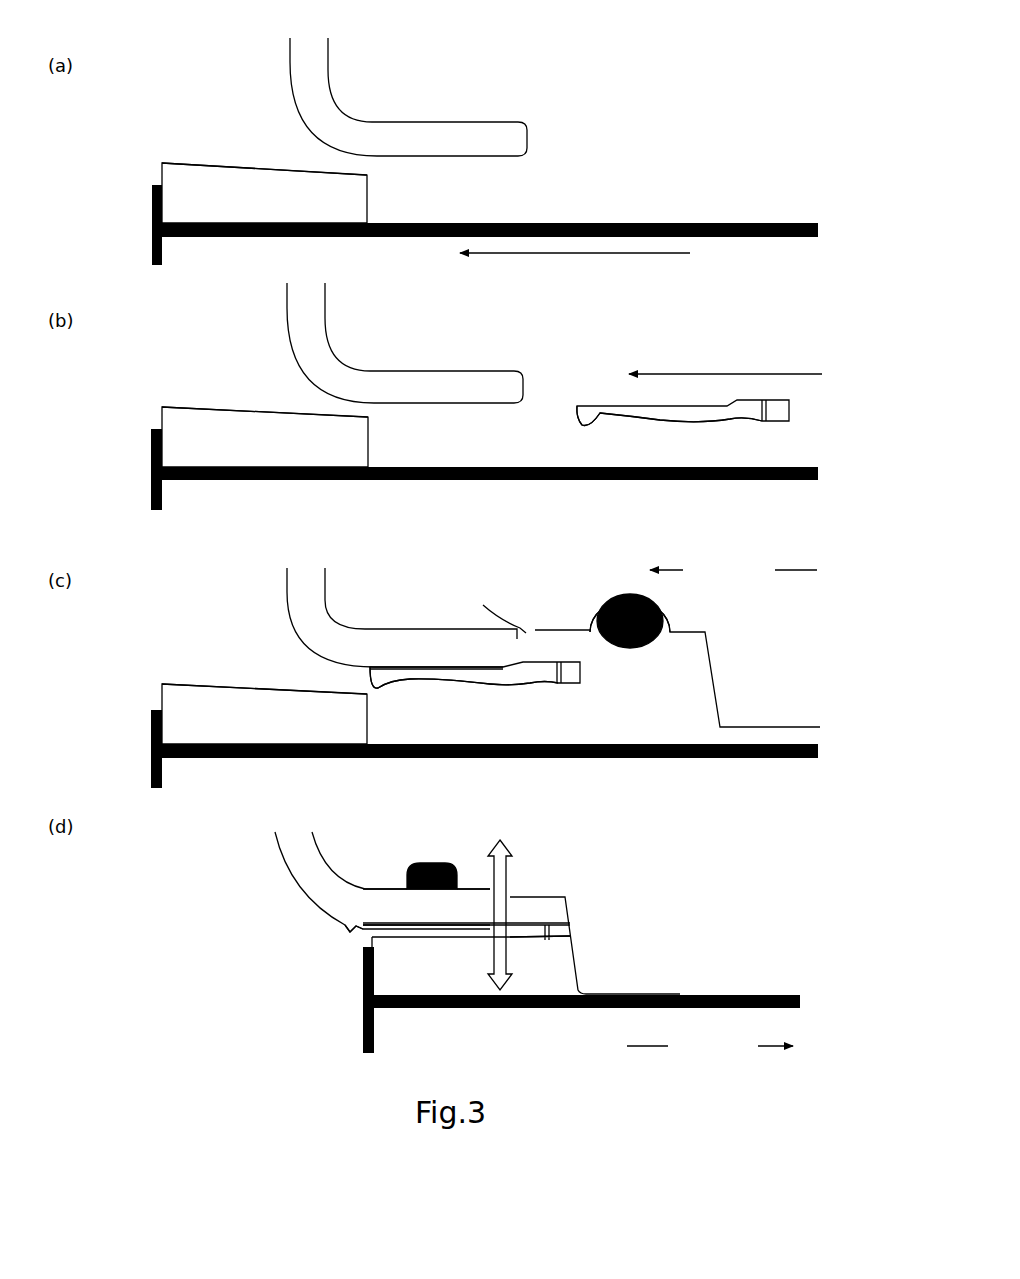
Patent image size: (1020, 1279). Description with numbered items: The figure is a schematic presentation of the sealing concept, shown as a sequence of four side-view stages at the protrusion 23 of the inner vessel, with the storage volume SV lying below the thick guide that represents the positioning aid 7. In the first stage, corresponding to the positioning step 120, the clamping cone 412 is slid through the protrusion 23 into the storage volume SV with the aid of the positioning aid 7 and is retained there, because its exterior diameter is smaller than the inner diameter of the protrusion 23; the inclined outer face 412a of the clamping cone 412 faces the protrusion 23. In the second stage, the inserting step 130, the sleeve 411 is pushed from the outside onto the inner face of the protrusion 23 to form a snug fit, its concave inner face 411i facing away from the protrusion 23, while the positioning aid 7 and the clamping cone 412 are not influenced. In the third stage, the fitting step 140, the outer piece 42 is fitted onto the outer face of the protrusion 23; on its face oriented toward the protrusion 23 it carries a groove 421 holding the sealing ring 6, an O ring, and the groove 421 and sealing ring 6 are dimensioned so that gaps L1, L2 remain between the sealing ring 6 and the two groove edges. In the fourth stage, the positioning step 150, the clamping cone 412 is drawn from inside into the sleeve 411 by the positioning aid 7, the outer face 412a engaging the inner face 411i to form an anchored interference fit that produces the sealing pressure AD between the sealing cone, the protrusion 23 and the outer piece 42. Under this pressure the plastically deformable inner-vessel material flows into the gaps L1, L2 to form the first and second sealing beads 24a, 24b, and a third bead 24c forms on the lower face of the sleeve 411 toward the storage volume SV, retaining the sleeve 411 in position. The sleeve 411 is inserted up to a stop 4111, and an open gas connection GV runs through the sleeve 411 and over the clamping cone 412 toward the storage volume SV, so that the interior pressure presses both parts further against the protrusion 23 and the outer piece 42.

The positioning aid 7 is at (757, 216).
The clamping cone 412 is at (266, 208).
The outer face of the clamping cone 412a is at (200, 158).
The protrusion 23 is at (451, 130).
The positioning step 120 is at (597, 248).
The inserting step 130 is at (776, 366).
The fitting step 140 is at (733, 573).
The positioning step 150 is at (710, 1046).
The sleeve 411 is at (689, 402).
The inner face of the sleeve 411i is at (631, 428).
The stop 4111 is at (578, 937).
The sealing ring 6 is at (603, 598).
The outer piece 42 is at (775, 684).
The groove 421 is at (672, 617).
The first sealing bead 24a is at (393, 882).
The second sealing bead 24b is at (451, 908).
The third sealing bead 24c is at (340, 925).
The storage volume SV is at (165, 101).
The first gap L1 is at (593, 647).
The second gap L2 is at (665, 650).
The sealing pressure AD is at (505, 900).
The gas connection GV is at (545, 912).